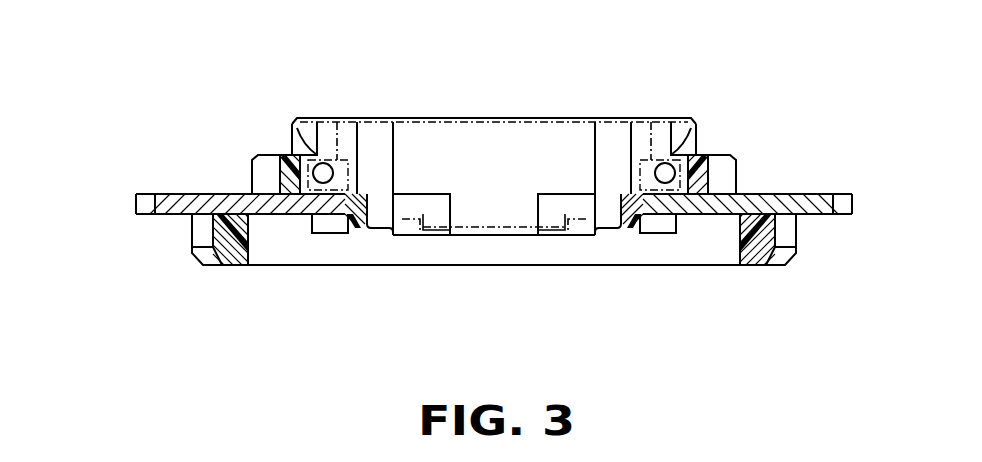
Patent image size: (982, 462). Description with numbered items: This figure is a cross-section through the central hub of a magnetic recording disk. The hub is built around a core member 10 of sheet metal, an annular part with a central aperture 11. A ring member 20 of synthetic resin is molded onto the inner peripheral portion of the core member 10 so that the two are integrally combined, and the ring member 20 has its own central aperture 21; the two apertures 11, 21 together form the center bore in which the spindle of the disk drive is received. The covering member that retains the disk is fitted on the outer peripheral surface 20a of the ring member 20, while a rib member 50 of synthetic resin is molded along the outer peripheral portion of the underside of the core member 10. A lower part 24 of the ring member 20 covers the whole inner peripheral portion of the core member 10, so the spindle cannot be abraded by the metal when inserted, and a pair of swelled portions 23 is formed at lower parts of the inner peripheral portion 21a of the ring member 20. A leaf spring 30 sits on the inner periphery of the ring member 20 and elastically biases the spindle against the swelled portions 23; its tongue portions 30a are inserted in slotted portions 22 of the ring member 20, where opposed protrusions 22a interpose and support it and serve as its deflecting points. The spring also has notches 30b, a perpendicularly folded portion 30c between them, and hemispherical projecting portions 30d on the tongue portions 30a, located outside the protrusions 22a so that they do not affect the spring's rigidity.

The core member 10 is at (152, 222).
The central aperture 11 is at (640, 177).
The ring member 20 is at (678, 116).
The outer peripheral surface 20a is at (738, 176).
The central aperture 21 is at (462, 130).
The inner peripheral portion 21a is at (497, 185).
The slotted portions 22 is at (327, 128).
The protrusion 22a is at (377, 120).
The swelled portions 23 is at (432, 216).
The lower part 24 is at (357, 228).
The leaf spring 30 is at (514, 118).
The tongue portions 30a is at (292, 124).
The notches 30b is at (418, 210).
The folded portion 30c is at (513, 230).
The projecting portions 30d is at (676, 160).
The rib member 50 is at (230, 243).